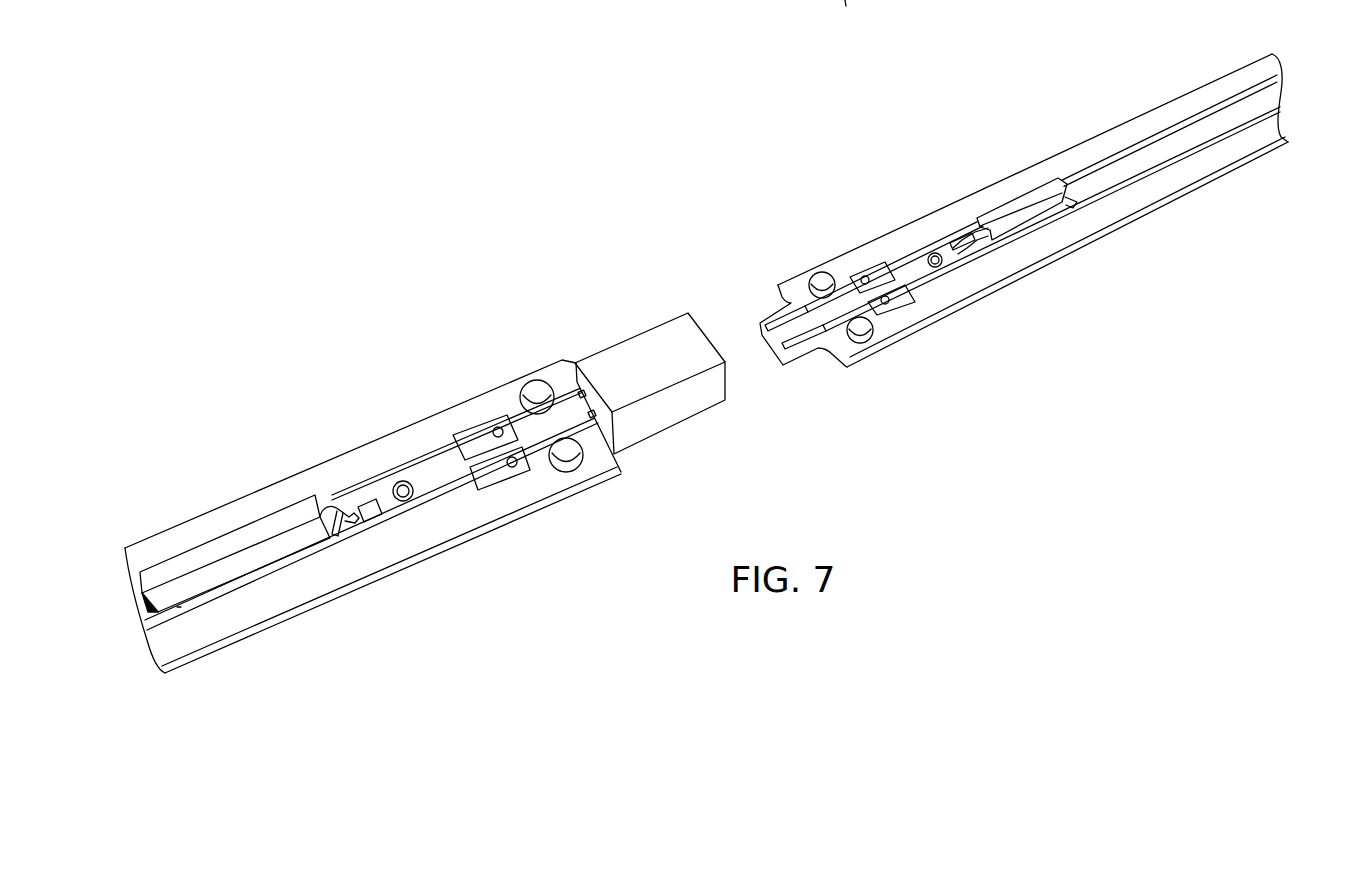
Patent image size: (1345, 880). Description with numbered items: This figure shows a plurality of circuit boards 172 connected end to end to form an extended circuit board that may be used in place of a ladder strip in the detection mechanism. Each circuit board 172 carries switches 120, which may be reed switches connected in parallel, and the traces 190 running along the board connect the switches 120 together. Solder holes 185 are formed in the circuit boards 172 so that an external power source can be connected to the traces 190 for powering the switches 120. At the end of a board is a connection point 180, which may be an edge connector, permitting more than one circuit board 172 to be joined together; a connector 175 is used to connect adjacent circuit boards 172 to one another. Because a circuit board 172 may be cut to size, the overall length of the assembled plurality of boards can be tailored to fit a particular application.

The switches 120 is at (295, 512).
The circuit board 172 is at (455, 587).
The connector 175 is at (634, 379).
The connection point 180 is at (773, 303).
The solder holes 185 is at (533, 392).
The traces 190 is at (421, 470).